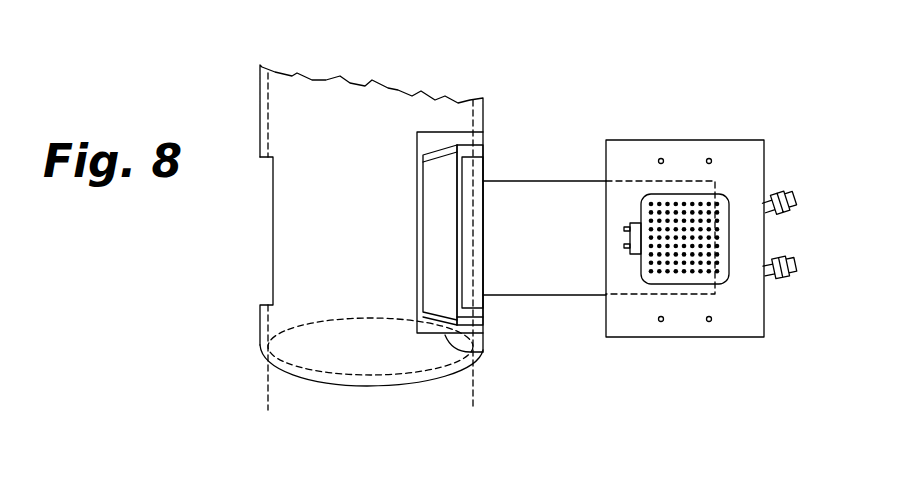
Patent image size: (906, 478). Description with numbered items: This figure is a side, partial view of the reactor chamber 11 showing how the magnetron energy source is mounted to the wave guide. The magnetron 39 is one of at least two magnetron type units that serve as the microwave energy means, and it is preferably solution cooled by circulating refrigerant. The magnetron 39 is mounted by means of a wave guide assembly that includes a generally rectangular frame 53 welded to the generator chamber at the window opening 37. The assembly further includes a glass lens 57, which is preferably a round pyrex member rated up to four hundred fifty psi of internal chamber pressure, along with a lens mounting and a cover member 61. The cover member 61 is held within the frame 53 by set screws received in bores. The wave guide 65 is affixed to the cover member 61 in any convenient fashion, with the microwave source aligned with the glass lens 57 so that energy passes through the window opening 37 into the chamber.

The housing 11 is at (260, 88).
The window opening 37 is at (266, 304).
The magnetron 39 is at (697, 140).
The rectangular frame 53 is at (438, 140).
The glass lens 57 is at (483, 352).
The cover member 61 is at (483, 157).
The wave guide 65 is at (508, 181).